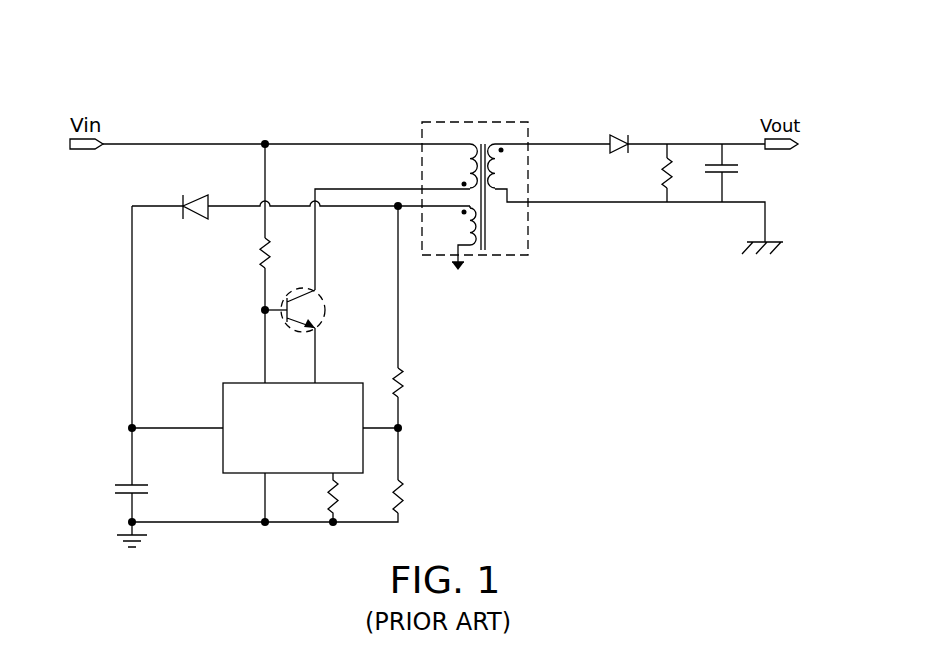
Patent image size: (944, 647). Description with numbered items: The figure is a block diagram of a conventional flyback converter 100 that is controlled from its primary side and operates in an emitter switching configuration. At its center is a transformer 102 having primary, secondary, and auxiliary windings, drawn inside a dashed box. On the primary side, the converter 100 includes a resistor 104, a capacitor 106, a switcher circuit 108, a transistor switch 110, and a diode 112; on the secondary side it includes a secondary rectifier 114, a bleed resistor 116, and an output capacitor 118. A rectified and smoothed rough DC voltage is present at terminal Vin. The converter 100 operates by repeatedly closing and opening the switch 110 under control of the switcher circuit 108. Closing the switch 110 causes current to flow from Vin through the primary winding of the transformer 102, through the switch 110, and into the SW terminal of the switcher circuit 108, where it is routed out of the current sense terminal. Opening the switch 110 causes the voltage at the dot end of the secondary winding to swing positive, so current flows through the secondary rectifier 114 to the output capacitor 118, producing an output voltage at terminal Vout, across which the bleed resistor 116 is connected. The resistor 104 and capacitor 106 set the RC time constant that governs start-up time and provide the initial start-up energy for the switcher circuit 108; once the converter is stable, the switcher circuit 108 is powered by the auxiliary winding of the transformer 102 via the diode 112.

The flyback converter 100 is at (708, 52).
The transformer 102 is at (478, 120).
The resistor 104 is at (240, 251).
The capacitor 106 is at (125, 482).
The switcher circuit 108 is at (232, 383).
The transistor switch 110 is at (322, 295).
The diode 112 is at (202, 197).
The secondary rectifier 114 is at (617, 137).
The bleed resistor 116 is at (658, 170).
The output capacitor 118 is at (732, 175).